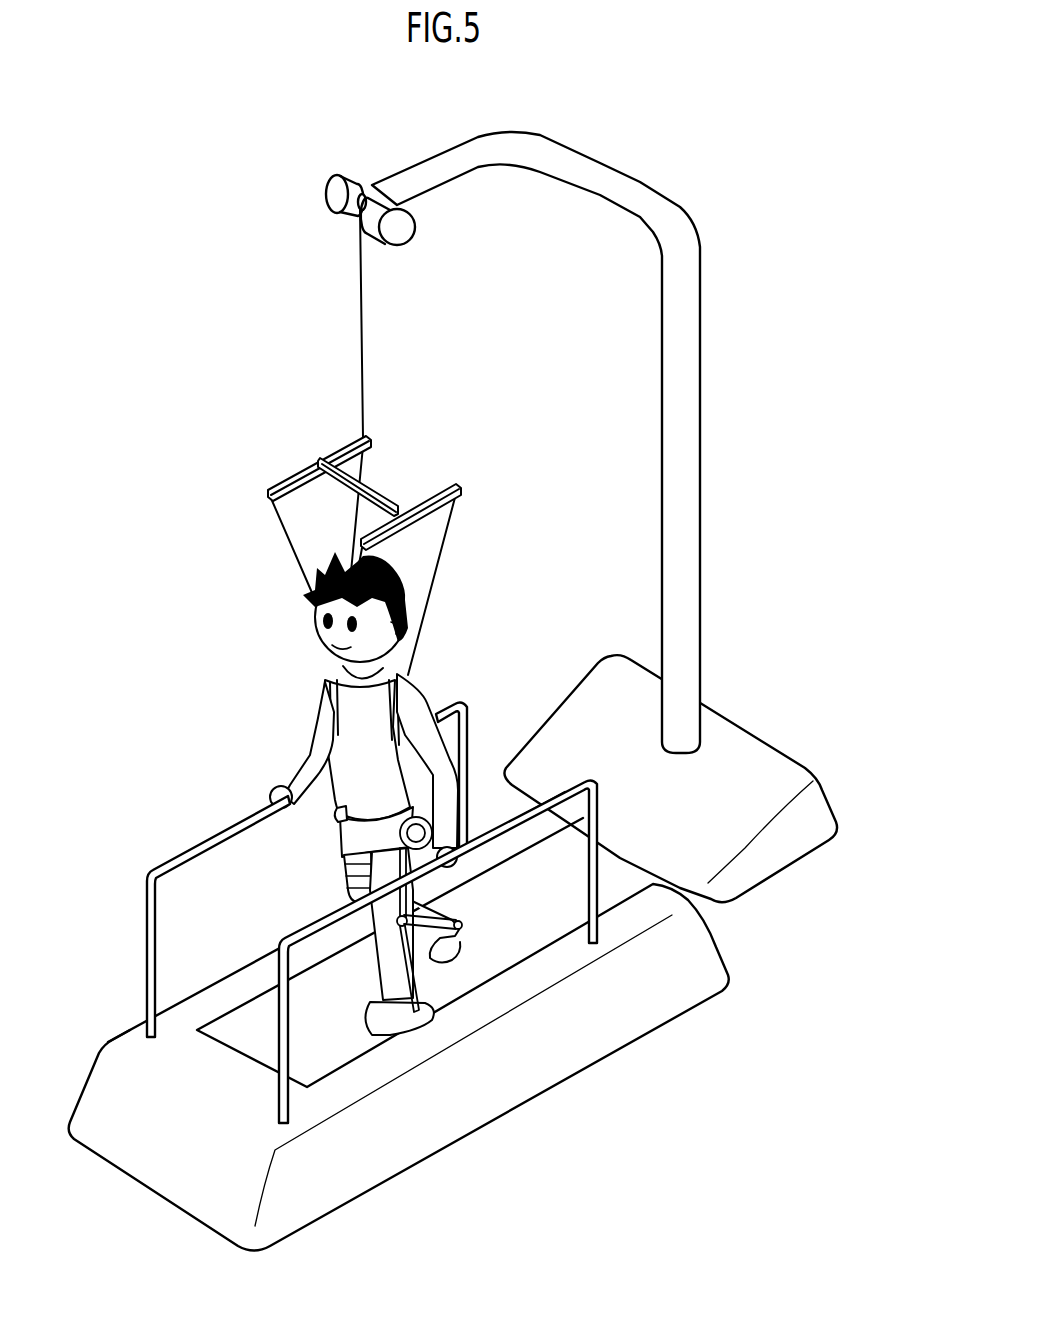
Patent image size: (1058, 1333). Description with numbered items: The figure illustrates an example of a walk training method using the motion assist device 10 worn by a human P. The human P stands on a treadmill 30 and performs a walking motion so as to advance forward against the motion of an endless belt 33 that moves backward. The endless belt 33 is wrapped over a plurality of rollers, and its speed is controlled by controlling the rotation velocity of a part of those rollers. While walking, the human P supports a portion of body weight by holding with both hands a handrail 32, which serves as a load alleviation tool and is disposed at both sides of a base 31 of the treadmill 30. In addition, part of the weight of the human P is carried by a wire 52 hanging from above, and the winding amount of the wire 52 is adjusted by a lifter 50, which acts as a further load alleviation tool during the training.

The motion assist device 10 is at (319, 841).
The treadmill 30 is at (432, 848).
The base 31 is at (712, 950).
The handrail 32 is at (172, 865).
The endless belt 33 is at (622, 880).
The lifter 50 is at (648, 146).
The wire 52 is at (369, 339).
The human P is at (342, 740).